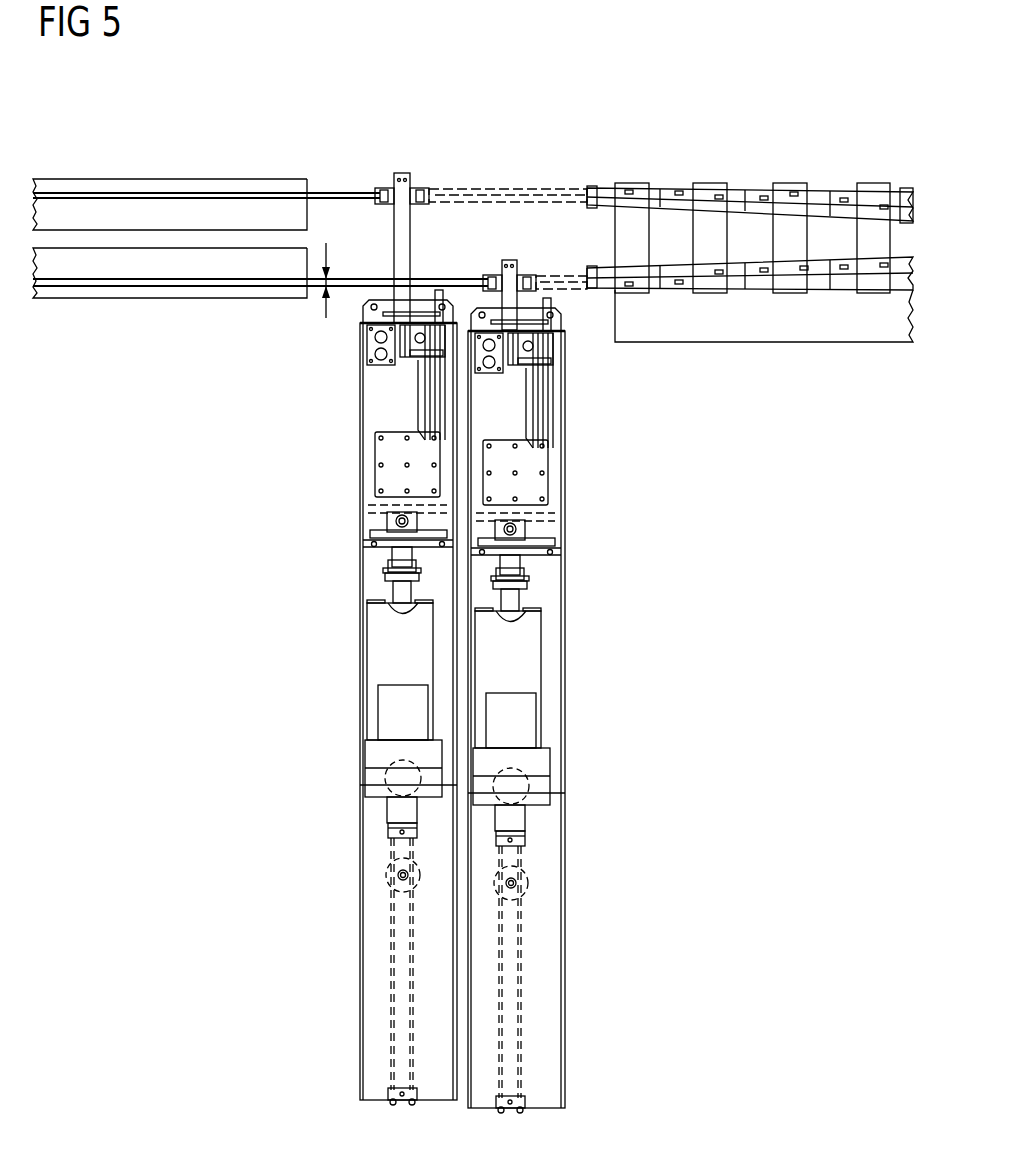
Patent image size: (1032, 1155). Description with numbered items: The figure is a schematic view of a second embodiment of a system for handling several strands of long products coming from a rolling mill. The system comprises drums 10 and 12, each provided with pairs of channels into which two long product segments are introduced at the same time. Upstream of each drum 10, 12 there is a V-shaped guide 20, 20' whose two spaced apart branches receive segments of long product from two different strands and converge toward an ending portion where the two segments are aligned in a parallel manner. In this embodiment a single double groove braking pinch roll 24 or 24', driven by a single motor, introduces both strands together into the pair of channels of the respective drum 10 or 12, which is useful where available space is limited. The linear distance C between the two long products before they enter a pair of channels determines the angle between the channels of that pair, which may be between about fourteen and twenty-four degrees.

The drum 10 is at (168, 318).
The drum 12 is at (170, 152).
The guide 20 is at (750, 185).
The guide 20' is at (750, 326).
The double groove braking pinch roll 24 is at (481, 220).
The double groove braking pinch roll 24' is at (535, 271).
The linear distance C is at (332, 282).